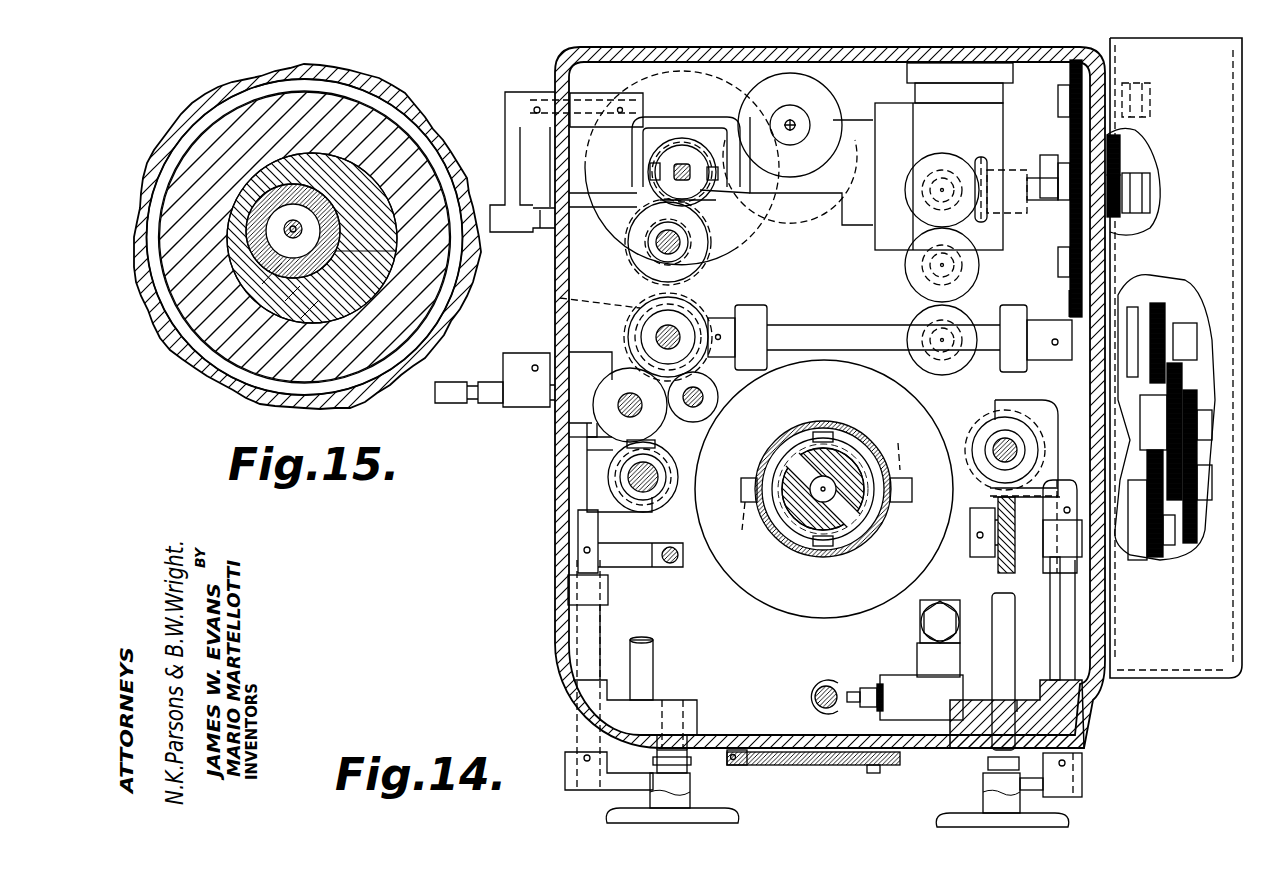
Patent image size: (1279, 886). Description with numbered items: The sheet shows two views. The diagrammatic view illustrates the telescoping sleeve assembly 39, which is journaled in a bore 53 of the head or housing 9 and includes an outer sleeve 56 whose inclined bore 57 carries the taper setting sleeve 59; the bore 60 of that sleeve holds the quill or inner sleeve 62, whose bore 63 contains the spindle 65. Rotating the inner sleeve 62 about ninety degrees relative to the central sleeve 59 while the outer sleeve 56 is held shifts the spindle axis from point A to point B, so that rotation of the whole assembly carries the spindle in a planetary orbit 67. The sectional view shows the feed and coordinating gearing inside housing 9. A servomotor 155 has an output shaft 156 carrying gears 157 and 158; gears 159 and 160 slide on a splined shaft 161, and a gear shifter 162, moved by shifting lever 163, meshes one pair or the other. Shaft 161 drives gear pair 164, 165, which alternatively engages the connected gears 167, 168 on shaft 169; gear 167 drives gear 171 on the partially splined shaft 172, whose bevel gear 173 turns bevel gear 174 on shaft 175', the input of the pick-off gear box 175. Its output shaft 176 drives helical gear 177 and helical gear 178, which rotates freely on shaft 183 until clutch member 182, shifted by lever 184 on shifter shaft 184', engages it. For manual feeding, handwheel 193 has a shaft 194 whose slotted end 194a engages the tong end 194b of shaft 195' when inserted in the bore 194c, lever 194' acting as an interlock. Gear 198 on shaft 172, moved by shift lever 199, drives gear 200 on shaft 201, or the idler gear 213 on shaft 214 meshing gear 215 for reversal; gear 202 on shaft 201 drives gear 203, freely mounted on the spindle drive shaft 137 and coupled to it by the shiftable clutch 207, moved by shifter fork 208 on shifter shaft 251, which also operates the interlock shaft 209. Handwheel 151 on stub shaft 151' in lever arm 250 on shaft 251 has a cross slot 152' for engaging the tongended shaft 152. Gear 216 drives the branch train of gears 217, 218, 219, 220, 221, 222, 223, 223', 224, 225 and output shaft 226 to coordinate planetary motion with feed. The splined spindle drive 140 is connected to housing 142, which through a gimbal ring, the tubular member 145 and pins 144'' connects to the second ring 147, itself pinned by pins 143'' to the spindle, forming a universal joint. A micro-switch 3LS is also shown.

In FIG. 15, the housing 9 is at (352, 76).
In FIG. 14, the housing 9 is at (553, 601).
In FIG. 15, the outer sleeve 56 is at (258, 108).
In FIG. 15, the point B is at (296, 223).
In FIG. 15, the point A is at (310, 238).
In FIG. 15, the spindle 65 is at (283, 218).
In FIG. 15, the bore 53 is at (413, 180).
In FIG. 15, the telescoping sleeve assembly 39 is at (443, 205).
In FIG. 15, the inclined bore 57 is at (400, 253).
In FIG. 15, the taper setting sleeve 59 is at (385, 271).
In FIG. 15, the planetary orbit 67 is at (290, 283).
In FIG. 15, the bore 63 is at (262, 284).
In FIG. 15, the bore 60 is at (285, 301).
In FIG. 15, the quill 62 is at (300, 319).
In FIG. 14, the shifting lever 163 is at (527, 88).
In FIG. 14, the splined shaft 161 is at (680, 163).
In FIG. 14, the gear 159 is at (687, 114).
In FIG. 14, the gear 160 is at (710, 71).
In FIG. 14, the gear shifter 162 is at (693, 147).
In FIG. 14, the output shaft 156 is at (797, 110).
In FIG. 14, the gear 157 is at (812, 118).
In FIG. 14, the gear 158 is at (812, 130).
In FIG. 14, the servomotor 155 is at (955, 107).
In FIG. 14, the gear 219 is at (1068, 84).
In FIG. 14, the gear 218 is at (1071, 153).
In FIG. 14, the gear 220 is at (1130, 153).
In FIG. 14, the gear 221 is at (1113, 215).
In FIG. 14, the gear 222 is at (993, 227).
In FIG. 14, the gear 217 is at (1068, 286).
In FIG. 14, the gear 216 is at (1070, 307).
In FIG. 14, the gear 223' is at (900, 204).
In FIG. 14, the gear 223 is at (910, 265).
In FIG. 14, the gear 224 is at (913, 280).
In FIG. 14, the gear 225 is at (915, 320).
In FIG. 14, the output shaft 226 is at (947, 370).
In FIG. 14, the gear 164 is at (720, 193).
In FIG. 14, the gear 165 is at (713, 197).
In FIG. 14, the gear 167 is at (737, 228).
In FIG. 14, the gear 168 is at (658, 246).
In FIG. 14, the shaft 169 is at (655, 262).
In FIG. 14, the gear 171 is at (700, 307).
In FIG. 14, the partially splined shaft 172 is at (660, 332).
In FIG. 14, the bevel gear 173 is at (560, 299).
In FIG. 14, the bevel gear 174 is at (746, 308).
In FIG. 14, the shaft 175' is at (883, 328).
In FIG. 14, the pick-off gears 175 is at (1193, 417).
In FIG. 14, the gear 198 is at (642, 360).
In FIG. 14, the shift lever 199 is at (482, 403).
In FIG. 14, the gear 202 is at (590, 413).
In FIG. 14, the shaft 201 is at (643, 408).
In FIG. 14, the idler gear 213 is at (720, 391).
In FIG. 14, the shaft 214 is at (700, 399).
In FIG. 14, the gear 215 is at (587, 424).
In FIG. 14, the gear 200 is at (585, 430).
In FIG. 14, the gear 203 is at (592, 438).
In FIG. 14, the shiftable clutch 207 is at (660, 452).
In FIG. 14, the spindle transmission drive shaft 137 is at (623, 474).
In FIG. 14, the vertically slidable shaft 209 is at (668, 568).
In FIG. 14, the shifter fork 208 is at (558, 655).
In FIG. 14, the shifter shaft 251 is at (600, 657).
In FIG. 14, the tongended shaft 152 is at (666, 668).
In FIG. 14, the cross slot 152' is at (708, 729).
In FIG. 14, the stub shaft 151' is at (694, 766).
In FIG. 14, the handwheel 151 is at (678, 798).
In FIG. 14, the lever arm 250 is at (620, 790).
In FIG. 14, the micro-switch 3LS is at (827, 715).
In FIG. 14, the tubular member 145 is at (790, 557).
In FIG. 14, the pins 143'' is at (836, 495).
In FIG. 14, the splined spindle drive 140 is at (837, 547).
In FIG. 14, the second circular ring 147 is at (780, 528).
In FIG. 14, the housing 142 is at (843, 521).
In FIG. 14, the pins 144'' is at (824, 486).
In FIG. 14, the helical gear 178 is at (964, 452).
In FIG. 14, the clutch member 182 is at (975, 467).
In FIG. 14, the shaft 183 is at (1012, 444).
In FIG. 14, the lever 184 is at (1039, 486).
In FIG. 14, the shifter shaft 184' is at (1102, 618).
In FIG. 14, the helical gear 177 is at (1007, 574).
In FIG. 14, the output shaft 176 is at (972, 545).
In FIG. 14, the shaft 195' is at (982, 666).
In FIG. 14, the tong end 194b is at (1017, 753).
In FIG. 14, the shaft 194 is at (972, 770).
In FIG. 14, the slotted end 194a is at (1019, 754).
In FIG. 14, the handwheel 193 is at (957, 817).
In FIG. 14, the lever 194' is at (1089, 775).
In FIG. 14, the bore 194c is at (1017, 712).